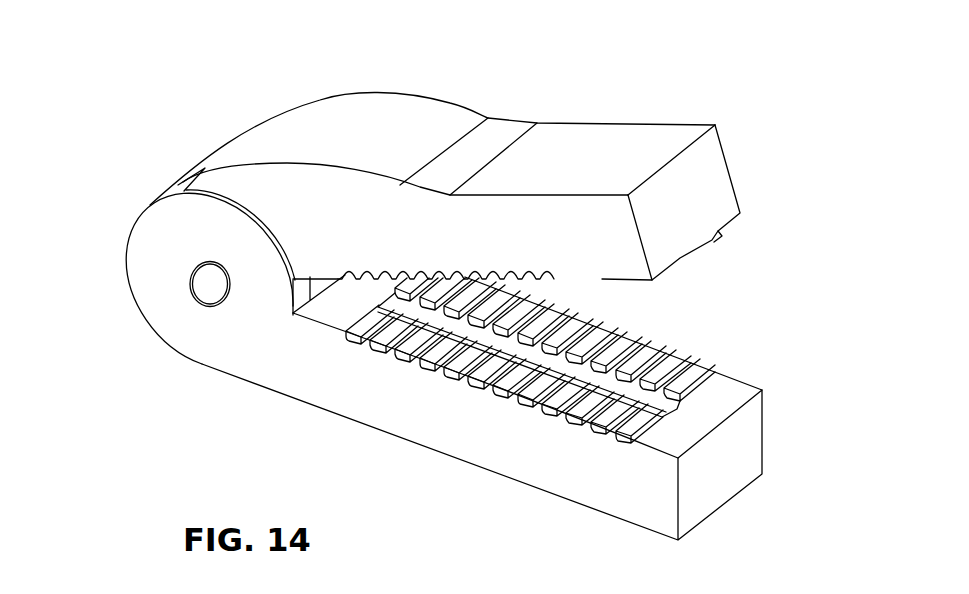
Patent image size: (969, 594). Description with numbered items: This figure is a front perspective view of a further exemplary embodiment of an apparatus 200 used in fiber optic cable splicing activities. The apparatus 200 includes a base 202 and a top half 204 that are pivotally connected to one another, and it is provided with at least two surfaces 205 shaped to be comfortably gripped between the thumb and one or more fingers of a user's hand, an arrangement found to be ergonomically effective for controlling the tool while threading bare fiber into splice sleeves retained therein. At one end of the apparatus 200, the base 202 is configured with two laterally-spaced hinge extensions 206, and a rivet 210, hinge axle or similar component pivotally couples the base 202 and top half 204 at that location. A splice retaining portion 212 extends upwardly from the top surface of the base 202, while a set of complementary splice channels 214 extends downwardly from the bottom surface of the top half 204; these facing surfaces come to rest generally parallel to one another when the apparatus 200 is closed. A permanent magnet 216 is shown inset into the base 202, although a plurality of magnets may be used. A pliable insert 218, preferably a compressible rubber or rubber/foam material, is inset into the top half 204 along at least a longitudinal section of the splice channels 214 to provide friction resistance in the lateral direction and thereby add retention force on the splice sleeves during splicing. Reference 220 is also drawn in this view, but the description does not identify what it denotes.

The apparatus 200 is at (793, 125).
The base 202 is at (748, 443).
The top half 204 is at (710, 153).
The surfaces 205 is at (622, 140).
The hinge extensions 206 is at (143, 247).
The rivet 210 is at (210, 283).
The splice retaining portion 212 is at (590, 425).
The splice channels 214 is at (397, 260).
The permanent magnet 216 is at (657, 405).
The pliable insert 218 is at (712, 237).
The upper row of teeth 220 is at (667, 350).